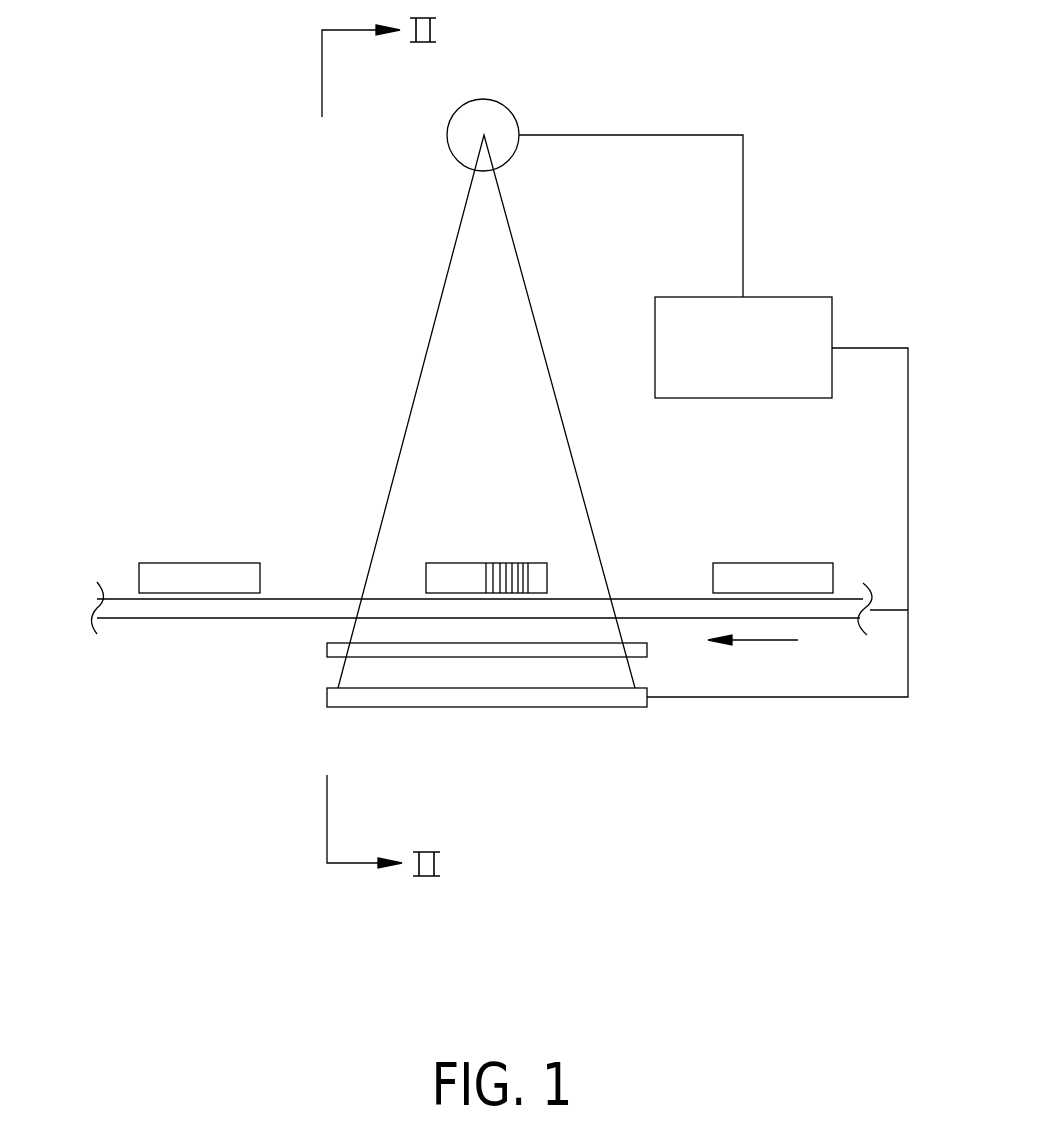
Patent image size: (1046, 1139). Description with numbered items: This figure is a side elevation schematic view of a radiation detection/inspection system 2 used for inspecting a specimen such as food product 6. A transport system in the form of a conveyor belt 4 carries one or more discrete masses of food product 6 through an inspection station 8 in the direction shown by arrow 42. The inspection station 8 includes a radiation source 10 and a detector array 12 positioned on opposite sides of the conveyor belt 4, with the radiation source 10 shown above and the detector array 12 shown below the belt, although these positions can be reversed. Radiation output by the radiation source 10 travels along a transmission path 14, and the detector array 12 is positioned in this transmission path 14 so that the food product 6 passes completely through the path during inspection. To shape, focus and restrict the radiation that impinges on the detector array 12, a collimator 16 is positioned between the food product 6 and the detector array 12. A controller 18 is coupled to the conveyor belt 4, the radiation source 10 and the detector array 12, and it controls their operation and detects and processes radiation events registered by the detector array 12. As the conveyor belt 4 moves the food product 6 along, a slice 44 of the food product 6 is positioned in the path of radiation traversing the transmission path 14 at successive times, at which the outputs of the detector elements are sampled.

The radiation detection/inspection system 2 is at (186, 372).
The conveyor belt 4 is at (267, 612).
The food product 6 is at (197, 563).
The inspection station 8 is at (523, 755).
The radiation source 10 is at (502, 102).
The detector array 12 is at (565, 707).
The transmission path 14 is at (433, 312).
The collimator 16 is at (327, 650).
The controller 18 is at (783, 297).
The arrow 42 is at (758, 640).
The slice 44 is at (488, 563).